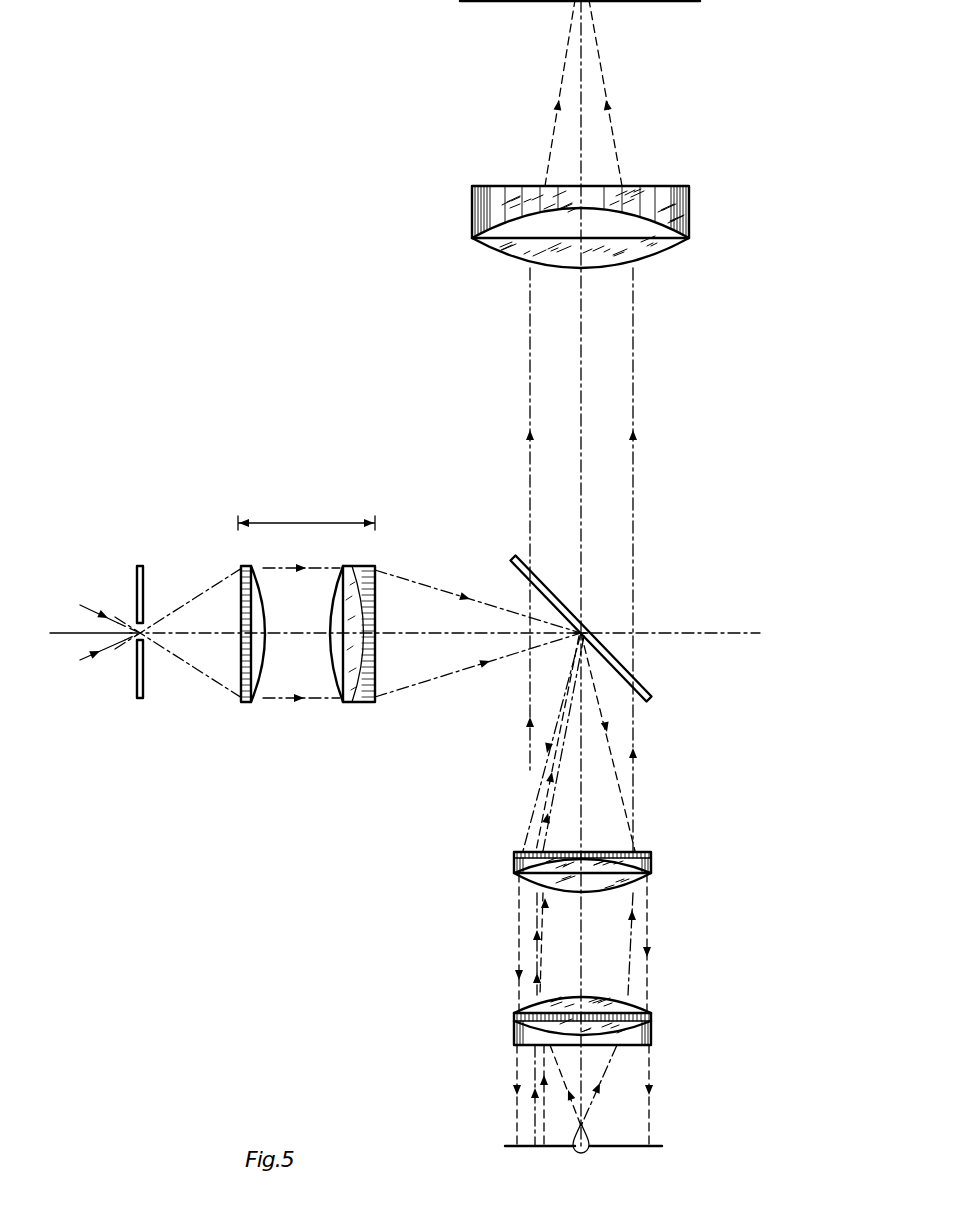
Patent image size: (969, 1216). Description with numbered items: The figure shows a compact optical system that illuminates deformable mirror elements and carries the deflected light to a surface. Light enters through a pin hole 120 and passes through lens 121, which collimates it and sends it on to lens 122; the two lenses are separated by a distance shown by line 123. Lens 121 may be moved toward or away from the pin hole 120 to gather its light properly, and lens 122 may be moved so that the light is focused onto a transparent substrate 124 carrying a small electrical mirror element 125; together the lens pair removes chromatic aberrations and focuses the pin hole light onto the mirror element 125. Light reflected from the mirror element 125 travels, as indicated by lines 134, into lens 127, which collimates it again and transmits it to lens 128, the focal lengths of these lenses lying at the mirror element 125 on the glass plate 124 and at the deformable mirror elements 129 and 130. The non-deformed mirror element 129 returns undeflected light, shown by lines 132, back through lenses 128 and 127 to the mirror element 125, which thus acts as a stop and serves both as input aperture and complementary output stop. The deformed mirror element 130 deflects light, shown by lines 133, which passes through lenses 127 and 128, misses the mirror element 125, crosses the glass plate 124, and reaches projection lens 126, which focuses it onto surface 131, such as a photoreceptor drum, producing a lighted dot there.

The pin hole 120 is at (140, 702).
The lens 121 is at (246, 703).
The lens 122 is at (358, 703).
The line 123 is at (313, 523).
The transparent substrate 124 is at (650, 700).
The mirror element 125 is at (588, 627).
The projection lens 126 is at (613, 215).
The lens 127 is at (653, 863).
The lens 128 is at (653, 1030).
The deformable mirror element 129 is at (538, 1146).
The deformable mirror element 130 is at (587, 1148).
The surface 131 is at (607, 31).
The lines 132 is at (558, 740).
The lines 133 is at (707, 888).
The lines 134 is at (528, 835).